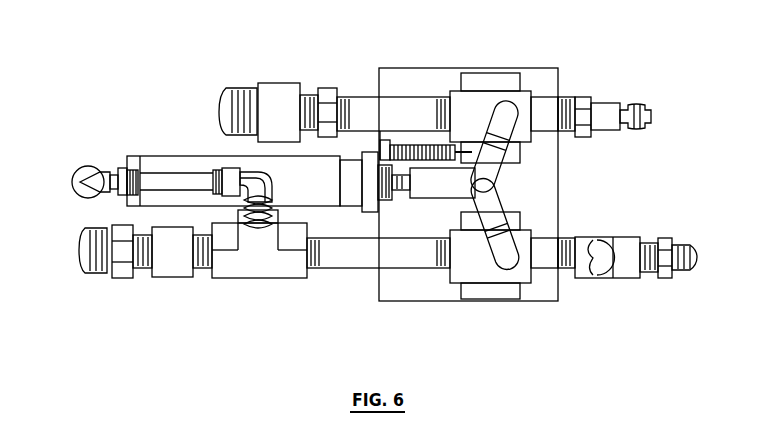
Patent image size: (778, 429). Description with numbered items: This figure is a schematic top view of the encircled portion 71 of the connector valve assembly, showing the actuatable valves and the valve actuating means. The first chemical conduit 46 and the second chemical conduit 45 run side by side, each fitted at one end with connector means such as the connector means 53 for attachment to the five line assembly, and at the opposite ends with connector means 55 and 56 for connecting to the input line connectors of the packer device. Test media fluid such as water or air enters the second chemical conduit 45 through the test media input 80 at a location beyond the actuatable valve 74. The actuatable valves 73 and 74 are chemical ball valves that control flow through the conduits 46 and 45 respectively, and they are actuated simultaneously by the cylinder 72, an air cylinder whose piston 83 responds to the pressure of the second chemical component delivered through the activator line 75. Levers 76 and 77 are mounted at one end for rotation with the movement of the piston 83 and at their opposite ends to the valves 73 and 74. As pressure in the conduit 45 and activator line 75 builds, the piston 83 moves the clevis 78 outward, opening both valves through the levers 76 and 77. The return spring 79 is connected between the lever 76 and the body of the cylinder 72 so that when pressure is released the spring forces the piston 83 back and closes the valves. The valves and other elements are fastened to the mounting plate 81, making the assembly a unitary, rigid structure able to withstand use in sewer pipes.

The second chemical conduit 45 is at (340, 262).
The first chemical conduit 46 is at (362, 103).
The connector means 53 is at (97, 272).
The connector means 55 is at (665, 243).
The connector means 56 is at (605, 113).
The encircled portion 71 is at (244, 70).
The cylinder 72 is at (152, 157).
The actuatable valve 73 is at (519, 99).
The actuatable valve 74 is at (460, 272).
The activator line 75 is at (178, 180).
The lever 76 is at (487, 173).
The lever 77 is at (512, 208).
The clevis 78 is at (427, 192).
The return spring 79 is at (390, 143).
The test media input 80 is at (597, 262).
The mounting plate 81 is at (417, 73).
The piston 83 is at (393, 190).